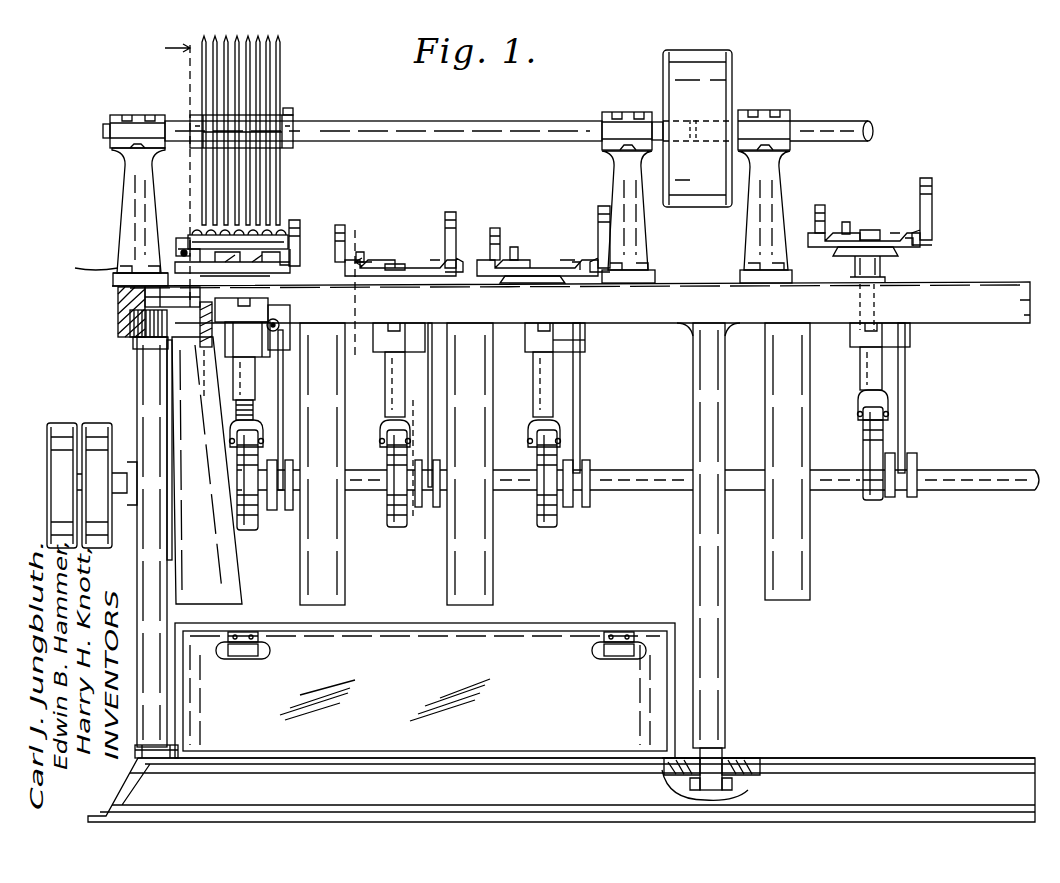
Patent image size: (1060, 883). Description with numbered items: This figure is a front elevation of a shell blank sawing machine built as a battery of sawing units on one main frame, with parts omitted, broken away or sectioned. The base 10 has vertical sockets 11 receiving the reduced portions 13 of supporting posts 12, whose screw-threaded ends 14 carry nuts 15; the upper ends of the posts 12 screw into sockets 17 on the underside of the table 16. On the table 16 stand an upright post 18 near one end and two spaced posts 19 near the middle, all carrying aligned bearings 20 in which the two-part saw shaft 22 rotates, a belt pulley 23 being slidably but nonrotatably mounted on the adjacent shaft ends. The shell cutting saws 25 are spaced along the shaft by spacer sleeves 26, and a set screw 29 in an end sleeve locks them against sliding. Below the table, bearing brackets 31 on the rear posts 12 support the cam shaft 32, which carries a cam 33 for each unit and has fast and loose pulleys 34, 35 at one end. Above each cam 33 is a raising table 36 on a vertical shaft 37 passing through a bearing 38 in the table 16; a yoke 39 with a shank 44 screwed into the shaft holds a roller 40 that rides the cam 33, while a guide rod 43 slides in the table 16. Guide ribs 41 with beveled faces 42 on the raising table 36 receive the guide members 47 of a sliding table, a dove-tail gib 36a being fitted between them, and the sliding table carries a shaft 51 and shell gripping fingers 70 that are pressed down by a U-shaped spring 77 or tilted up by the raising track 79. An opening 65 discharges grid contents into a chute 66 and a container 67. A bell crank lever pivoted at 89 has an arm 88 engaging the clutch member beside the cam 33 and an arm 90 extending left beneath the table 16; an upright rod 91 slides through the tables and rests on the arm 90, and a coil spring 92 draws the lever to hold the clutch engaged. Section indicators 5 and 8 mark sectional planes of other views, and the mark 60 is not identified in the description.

The section line 5 is at (415, 472).
The section line 8 is at (196, 222).
The base 10 is at (561, 790).
The vertical sockets 11 is at (204, 370).
The supporting posts 12 is at (746, 665).
The reduced portions 13 is at (772, 757).
The screw-threaded ends 14 is at (762, 783).
The nuts 15 is at (695, 797).
The table 16 is at (571, 302).
The sockets 17 is at (133, 345).
The upright posts 18 is at (140, 217).
The spaced posts 19 is at (697, 217).
The aligned bearings 20 is at (132, 106).
The two-part saw shaft 22 is at (484, 130).
The belt pulley 23 is at (697, 128).
The shell cutting saws 25 is at (247, 94).
The spacer sleeves 26 is at (255, 136).
The set screw 29 is at (292, 113).
The bearing brackets 31 is at (173, 472).
The cam shaft 32 is at (375, 492).
The cam 33 is at (250, 530).
The fast pulley 34 is at (95, 424).
The loose pulley 35 is at (62, 424).
The raising table 36 is at (404, 268).
The dove-tail gib 36a is at (574, 262).
The vertical shaft 37 is at (245, 380).
The bearing 38 is at (553, 340).
The yoke 39 is at (263, 432).
The roller 40 is at (250, 443).
The guide ribs 41 is at (838, 200).
The beveled faces 42 is at (393, 255).
The guide rod 43 is at (268, 310).
The shank 44 is at (255, 410).
The guide members 47 is at (273, 256).
The shaft 51 is at (183, 250).
The plate 60 is at (109, 265).
The opening 65 is at (159, 312).
The chute 66 is at (491, 464).
The container 67 is at (425, 690).
The shell gripping fingers 70 is at (276, 240).
The U-shaped spring 77 is at (345, 245).
The raising track 79 is at (456, 236).
The arm of bell crank lever 88 is at (284, 380).
The pivot 89 is at (282, 325).
The arm of bell crank lever 90 is at (270, 350).
The upright rod 91 is at (130, 325).
The coil spring 92 is at (206, 348).